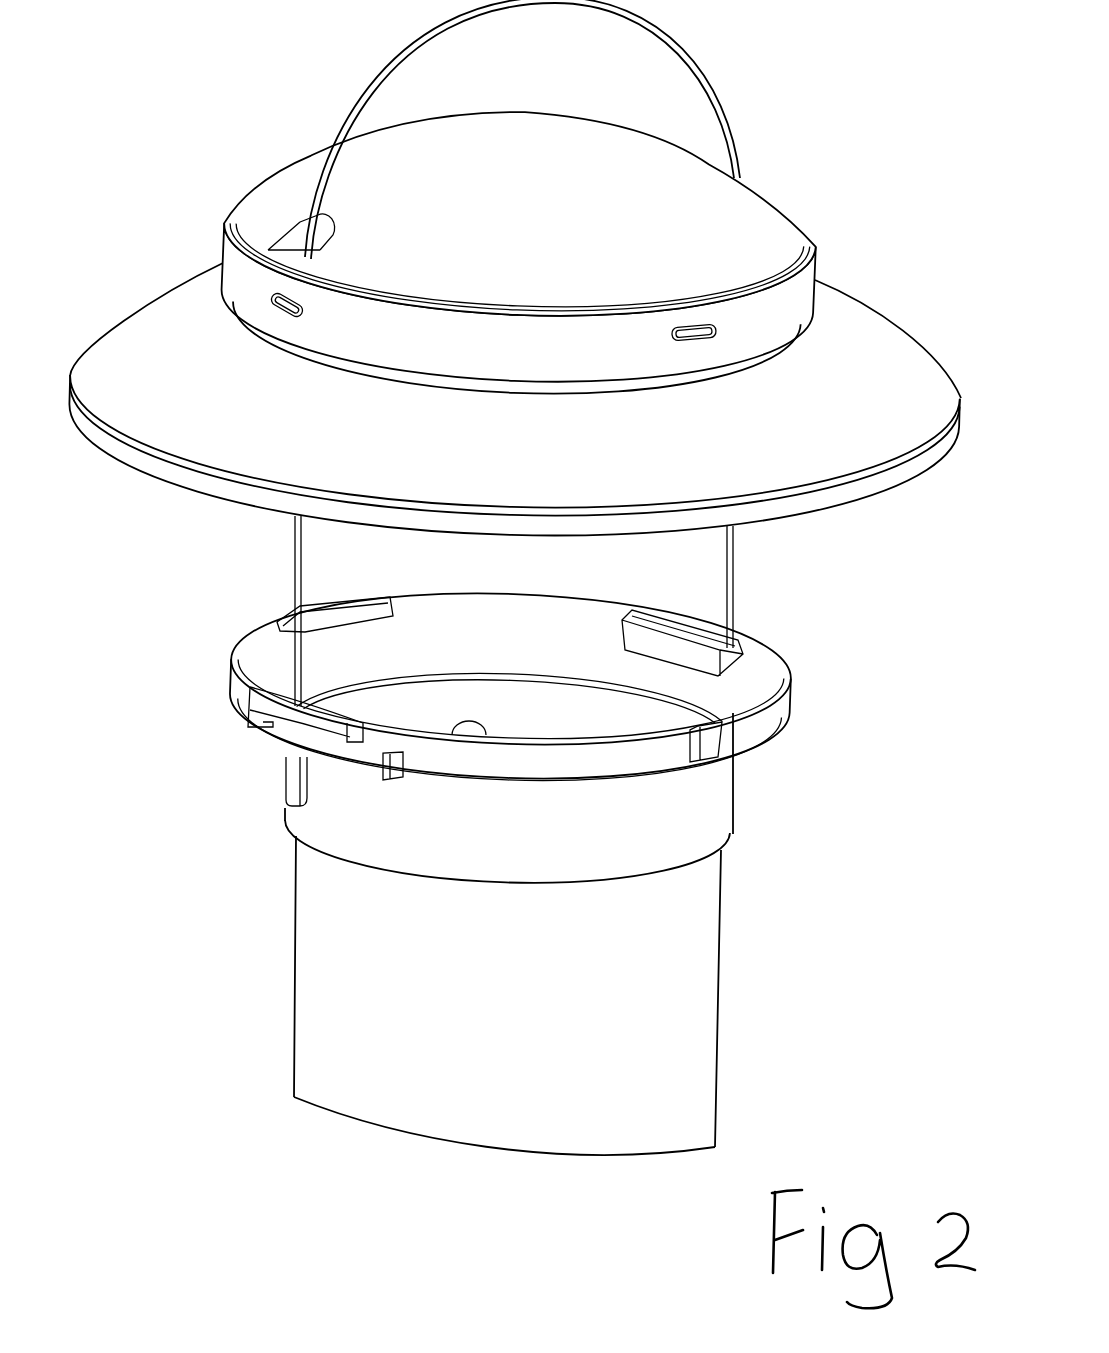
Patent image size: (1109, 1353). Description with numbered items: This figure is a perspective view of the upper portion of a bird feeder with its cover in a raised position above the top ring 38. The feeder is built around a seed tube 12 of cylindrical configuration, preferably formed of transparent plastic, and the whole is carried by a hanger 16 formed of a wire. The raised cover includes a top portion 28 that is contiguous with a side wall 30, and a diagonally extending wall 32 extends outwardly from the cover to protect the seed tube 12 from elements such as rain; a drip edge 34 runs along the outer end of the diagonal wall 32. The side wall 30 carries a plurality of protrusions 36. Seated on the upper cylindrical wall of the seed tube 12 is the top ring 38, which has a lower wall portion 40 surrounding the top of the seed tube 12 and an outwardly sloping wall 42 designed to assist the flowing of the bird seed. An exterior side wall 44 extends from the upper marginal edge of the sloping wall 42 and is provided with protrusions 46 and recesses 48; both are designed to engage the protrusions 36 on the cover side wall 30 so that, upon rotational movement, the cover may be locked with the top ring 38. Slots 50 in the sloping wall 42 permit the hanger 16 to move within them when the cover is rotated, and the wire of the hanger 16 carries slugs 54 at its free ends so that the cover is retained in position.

The seed tube 12 is at (716, 1060).
The hanger 16 is at (495, 202).
The top portion 28 is at (497, 228).
The side wall 30 is at (475, 371).
The diagonally extending wall 32 is at (512, 473).
The drip edge 34 is at (912, 472).
The protrusions 36 is at (272, 297).
The top ring 38 is at (580, 712).
The lower wall portion 40 is at (583, 851).
The outwardly sloping wall 42 is at (492, 643).
The exterior side wall 44 is at (782, 714).
The protrusions 46 is at (310, 600).
The recesses 48 is at (283, 742).
The slots 50 is at (668, 613).
The slugs 54 is at (290, 789).